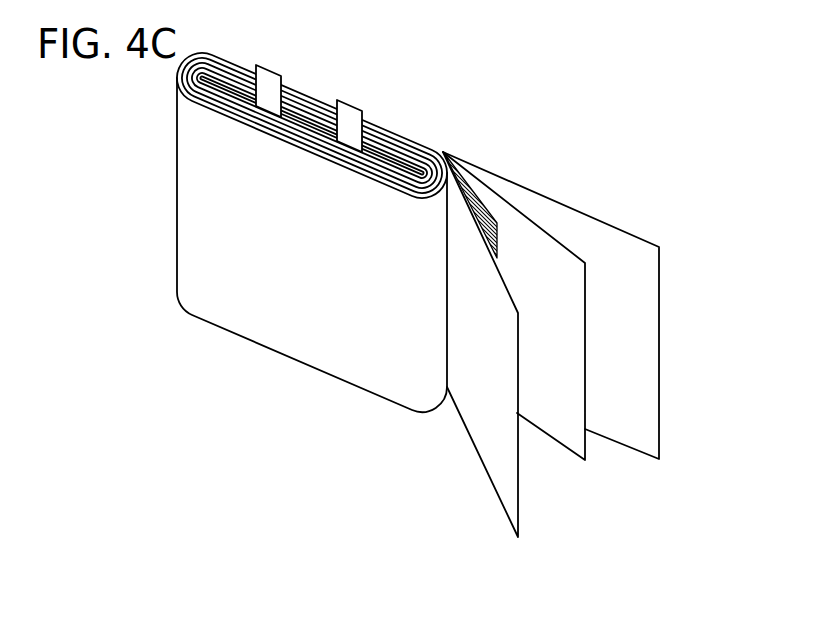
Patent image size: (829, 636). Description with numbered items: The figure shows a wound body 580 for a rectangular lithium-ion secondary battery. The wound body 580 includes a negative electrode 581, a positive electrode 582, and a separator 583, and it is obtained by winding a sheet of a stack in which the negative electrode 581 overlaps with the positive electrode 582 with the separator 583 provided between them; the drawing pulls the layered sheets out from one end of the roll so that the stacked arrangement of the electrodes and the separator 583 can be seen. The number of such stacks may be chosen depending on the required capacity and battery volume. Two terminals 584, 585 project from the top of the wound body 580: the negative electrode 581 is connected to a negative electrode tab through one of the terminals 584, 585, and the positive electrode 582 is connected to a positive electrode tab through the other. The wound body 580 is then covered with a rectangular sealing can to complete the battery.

The wound body 580 is at (139, 132).
The negative electrode 581 is at (492, 218).
The positive electrode 582 is at (626, 253).
The separator 583 is at (507, 475).
The terminal 584 is at (270, 77).
The terminal 585 is at (347, 110).